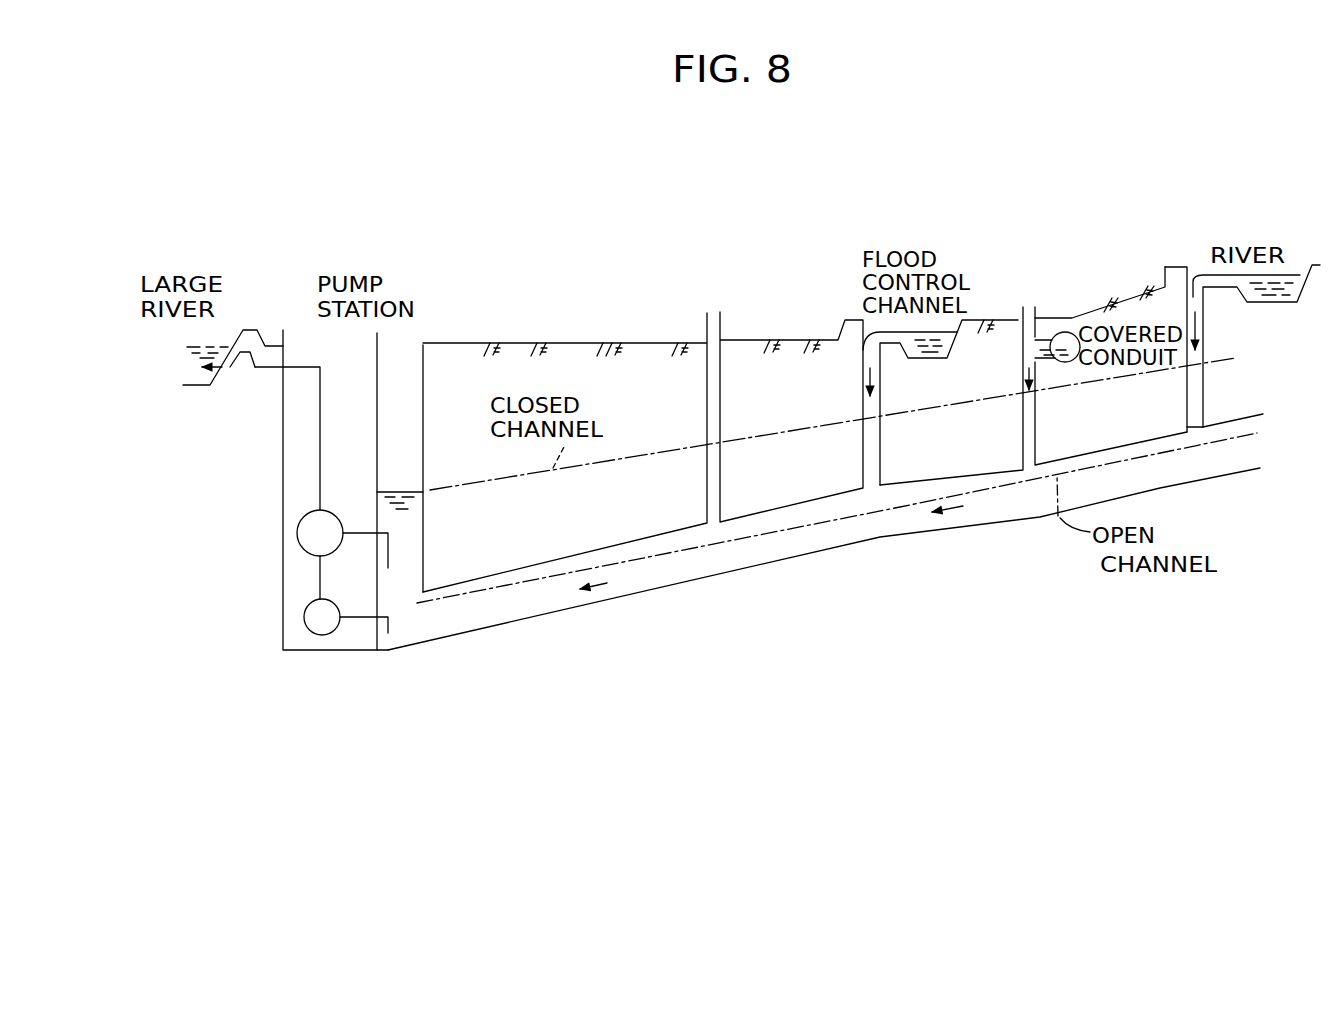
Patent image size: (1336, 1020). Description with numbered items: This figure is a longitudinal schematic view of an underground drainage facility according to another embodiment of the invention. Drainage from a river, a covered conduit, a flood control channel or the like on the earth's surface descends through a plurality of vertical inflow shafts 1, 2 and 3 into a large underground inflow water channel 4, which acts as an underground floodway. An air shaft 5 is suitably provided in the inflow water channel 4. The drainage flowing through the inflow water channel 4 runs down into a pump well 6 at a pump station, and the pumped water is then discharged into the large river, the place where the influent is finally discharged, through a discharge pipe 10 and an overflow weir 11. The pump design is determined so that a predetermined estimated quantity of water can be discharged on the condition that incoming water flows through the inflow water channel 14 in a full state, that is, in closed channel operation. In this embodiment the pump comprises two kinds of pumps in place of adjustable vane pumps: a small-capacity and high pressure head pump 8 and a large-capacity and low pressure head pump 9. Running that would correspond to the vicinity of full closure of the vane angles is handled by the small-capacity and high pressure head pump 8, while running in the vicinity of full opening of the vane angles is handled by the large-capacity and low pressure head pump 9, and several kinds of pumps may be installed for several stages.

The vertical inflow shaft 1 is at (1203, 383).
The vertical inflow shaft 2 is at (1037, 415).
The vertical inflow shaft 3 is at (880, 437).
The inflow water channel 4 is at (790, 556).
The air shaft 5 is at (723, 412).
The pump well 6 is at (412, 533).
The small-capacity and high pressure head pump 8 is at (340, 622).
The large-capacity and low pressure head pump 9 is at (300, 547).
The discharge pipe 10 is at (320, 472).
The overflow weir 11 is at (242, 366).
The inflow water channel 14 is at (1190, 413).